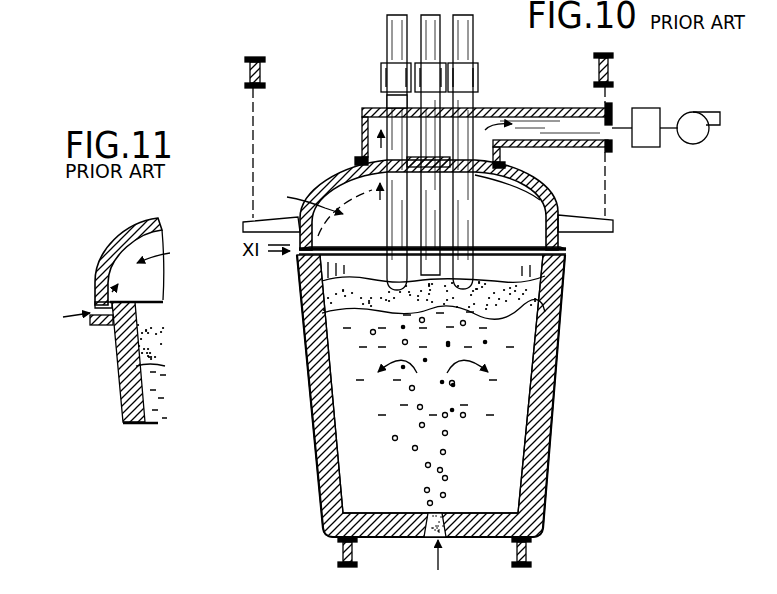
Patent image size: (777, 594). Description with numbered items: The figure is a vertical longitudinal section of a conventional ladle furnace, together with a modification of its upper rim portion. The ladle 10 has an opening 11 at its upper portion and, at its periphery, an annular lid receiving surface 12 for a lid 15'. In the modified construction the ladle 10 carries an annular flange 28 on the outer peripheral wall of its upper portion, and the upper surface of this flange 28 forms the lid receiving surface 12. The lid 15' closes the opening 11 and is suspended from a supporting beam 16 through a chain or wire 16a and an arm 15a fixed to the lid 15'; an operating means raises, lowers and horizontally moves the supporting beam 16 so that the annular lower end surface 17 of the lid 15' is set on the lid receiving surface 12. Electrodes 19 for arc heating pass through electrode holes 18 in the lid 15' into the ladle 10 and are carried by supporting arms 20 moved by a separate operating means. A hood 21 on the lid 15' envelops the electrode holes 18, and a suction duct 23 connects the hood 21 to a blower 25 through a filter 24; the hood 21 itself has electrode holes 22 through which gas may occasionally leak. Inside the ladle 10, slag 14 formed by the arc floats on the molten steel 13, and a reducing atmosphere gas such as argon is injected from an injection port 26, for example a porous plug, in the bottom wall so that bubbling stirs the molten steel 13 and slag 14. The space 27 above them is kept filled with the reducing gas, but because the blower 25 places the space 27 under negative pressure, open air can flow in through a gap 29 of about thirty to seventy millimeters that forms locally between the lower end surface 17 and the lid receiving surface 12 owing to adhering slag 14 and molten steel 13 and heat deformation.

In FIG. 10, the ladle 10 is at (541, 440).
In FIG. 11, the ladle 10 is at (122, 412).
In FIG. 10, the opening 11 is at (487, 262).
In FIG. 10, the lid receiving surface 12 is at (553, 250).
In FIG. 11, the lid receiving surface 12 is at (64, 321).
In FIG. 10, the molten steel 13 is at (350, 420).
In FIG. 11, the molten steel 13 is at (130, 383).
In FIG. 10, the slag 14 is at (340, 312).
In FIG. 11, the slag 14 is at (118, 357).
In FIG. 10, the lid 15' is at (429, 190).
In FIG. 11, the lid 15' is at (113, 261).
In FIG. 10, the arm 15a is at (253, 217).
In FIG. 10, the supporting beam 16 is at (616, 53).
In FIG. 10, the chain or wire 16a is at (255, 133).
In FIG. 10, the annular lower end surface 17 is at (307, 252).
In FIG. 11, the annular lower end surface 17 is at (142, 307).
In FIG. 10, the electrode holes 18 is at (541, 200).
In FIG. 10, the electrodes 19 is at (463, 30).
In FIG. 10, the supporting arms 20 is at (463, 70).
In FIG. 10, the hood 21 is at (360, 127).
In FIG. 10, the electrode holes of the hood 22 is at (393, 107).
In FIG. 10, the duct 23 is at (578, 110).
In FIG. 10, the filter 24 is at (642, 110).
In FIG. 10, the blower 25 is at (692, 113).
In FIG. 10, the injection port 26 is at (433, 540).
In FIG. 10, the space 27 is at (302, 200).
In FIG. 11, the space 27 is at (165, 253).
In FIG. 11, the annular flange 28 is at (95, 330).
In FIG. 11, the gap 29 is at (107, 308).